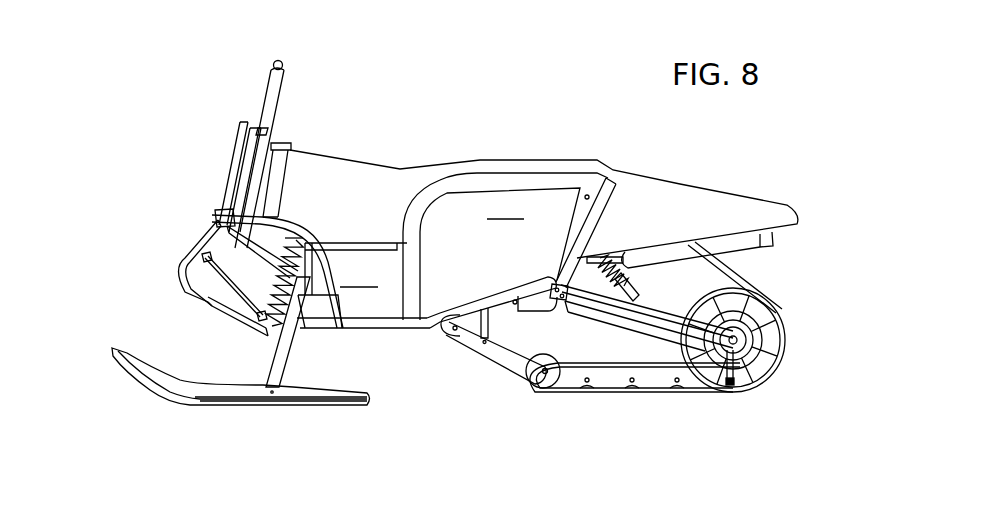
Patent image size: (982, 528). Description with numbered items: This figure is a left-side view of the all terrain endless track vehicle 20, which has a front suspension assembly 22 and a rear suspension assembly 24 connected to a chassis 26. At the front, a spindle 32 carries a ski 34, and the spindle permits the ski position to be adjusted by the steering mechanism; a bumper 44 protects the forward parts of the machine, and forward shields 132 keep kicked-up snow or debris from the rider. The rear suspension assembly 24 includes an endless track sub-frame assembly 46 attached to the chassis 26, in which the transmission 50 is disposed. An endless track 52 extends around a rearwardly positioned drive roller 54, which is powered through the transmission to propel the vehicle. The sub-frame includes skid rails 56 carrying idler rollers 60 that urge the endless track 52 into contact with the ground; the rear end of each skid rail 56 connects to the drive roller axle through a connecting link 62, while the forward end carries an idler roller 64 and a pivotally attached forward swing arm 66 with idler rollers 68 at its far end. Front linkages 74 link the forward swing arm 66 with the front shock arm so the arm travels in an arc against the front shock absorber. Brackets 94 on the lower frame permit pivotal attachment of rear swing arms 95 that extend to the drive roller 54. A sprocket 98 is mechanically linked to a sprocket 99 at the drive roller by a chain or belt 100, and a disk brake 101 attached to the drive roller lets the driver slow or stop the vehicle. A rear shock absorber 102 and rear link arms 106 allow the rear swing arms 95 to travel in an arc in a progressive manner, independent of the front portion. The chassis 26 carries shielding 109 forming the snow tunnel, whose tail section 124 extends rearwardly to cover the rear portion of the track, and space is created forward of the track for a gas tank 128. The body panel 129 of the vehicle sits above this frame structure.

The all terrain endless track vehicle 20 is at (493, 102).
The front suspension assembly 22 is at (122, 272).
The rear suspension assembly 24 is at (762, 446).
The chassis 26 is at (347, 331).
The spindle 32 is at (287, 372).
The ski 34 is at (213, 407).
The bumper 44 is at (192, 292).
The endless track sub-frame assembly 46 is at (780, 308).
The transmission 50 is at (515, 298).
The endless track 52 is at (730, 268).
The drive roller 54 is at (744, 367).
The skid rail 56 is at (693, 384).
The idler rollers 60 is at (679, 395).
The connecting link 62 is at (734, 389).
The idler roller 64 is at (545, 389).
The forward swing arm 66 is at (517, 367).
The idler rollers 68 is at (458, 338).
The front linkages 74 is at (487, 344).
The brackets 94 is at (561, 281).
The rear swing arms 95 is at (680, 336).
The sprocket 98 is at (538, 294).
The sprocket 99 is at (742, 344).
The chain or belt 100 is at (594, 313).
The disk brake 101 is at (748, 367).
The rear shock absorber 102 is at (624, 253).
The rear link arms 106 is at (630, 292).
The shielding 109 is at (505, 246).
The tail section 124 is at (797, 225).
The gas tank 128 is at (321, 271).
The body 129 is at (400, 169).
The forward shields 132 is at (212, 223).